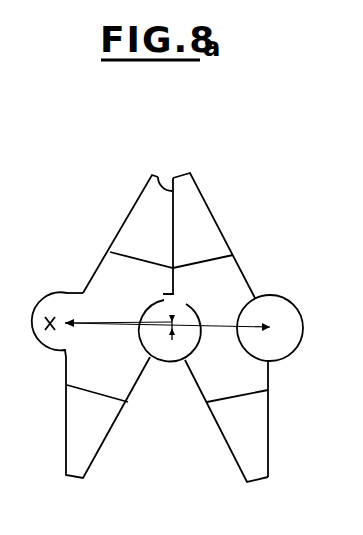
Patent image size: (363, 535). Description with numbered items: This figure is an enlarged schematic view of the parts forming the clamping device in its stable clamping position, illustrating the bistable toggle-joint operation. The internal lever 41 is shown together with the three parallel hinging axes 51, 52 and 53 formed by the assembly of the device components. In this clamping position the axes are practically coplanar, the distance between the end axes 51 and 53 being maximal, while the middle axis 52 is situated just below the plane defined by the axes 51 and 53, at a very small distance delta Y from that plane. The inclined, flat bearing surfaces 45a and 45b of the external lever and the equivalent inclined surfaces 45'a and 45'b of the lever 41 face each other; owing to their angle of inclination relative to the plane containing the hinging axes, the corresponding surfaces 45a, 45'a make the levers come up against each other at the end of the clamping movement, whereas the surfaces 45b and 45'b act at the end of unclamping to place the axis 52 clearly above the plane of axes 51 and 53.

The lever 41 is at (138, 198).
The inclined surface 45'a is at (146, 153).
The inclined flat bearing surface 45a is at (175, 206).
The axis 53 is at (73, 312).
The axis 52 is at (175, 331).
The axis 51 is at (274, 324).
The bearing surface 45'b is at (108, 441).
The inclined flat bearing surface 45b is at (233, 460).